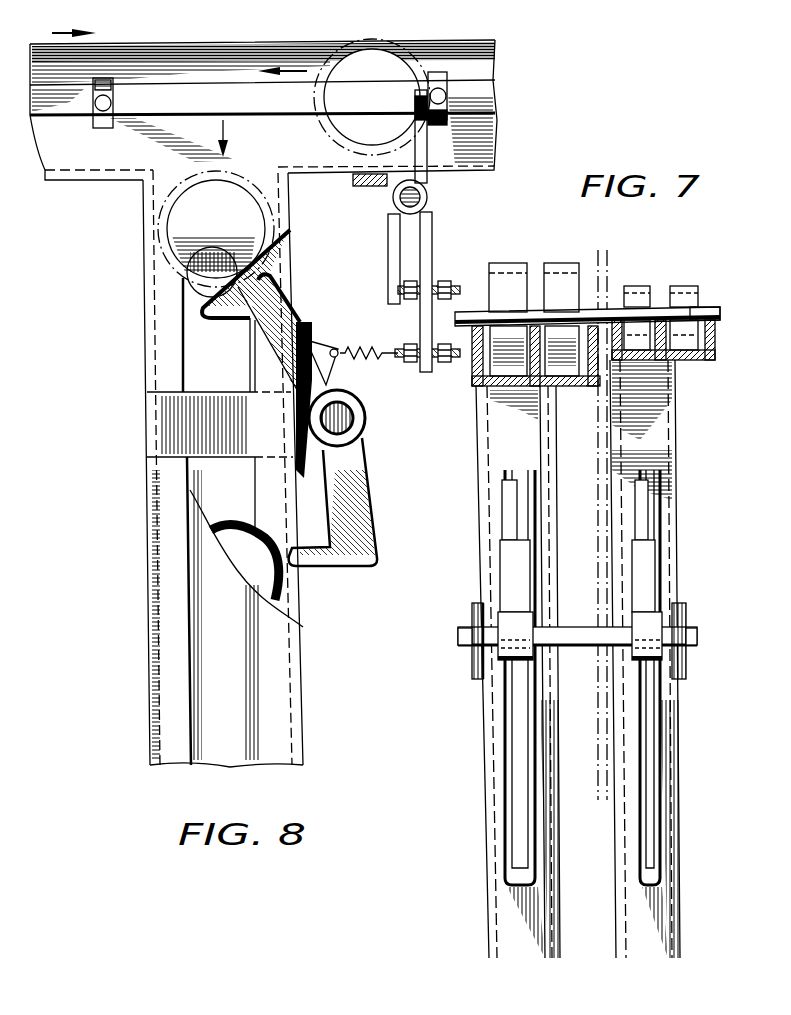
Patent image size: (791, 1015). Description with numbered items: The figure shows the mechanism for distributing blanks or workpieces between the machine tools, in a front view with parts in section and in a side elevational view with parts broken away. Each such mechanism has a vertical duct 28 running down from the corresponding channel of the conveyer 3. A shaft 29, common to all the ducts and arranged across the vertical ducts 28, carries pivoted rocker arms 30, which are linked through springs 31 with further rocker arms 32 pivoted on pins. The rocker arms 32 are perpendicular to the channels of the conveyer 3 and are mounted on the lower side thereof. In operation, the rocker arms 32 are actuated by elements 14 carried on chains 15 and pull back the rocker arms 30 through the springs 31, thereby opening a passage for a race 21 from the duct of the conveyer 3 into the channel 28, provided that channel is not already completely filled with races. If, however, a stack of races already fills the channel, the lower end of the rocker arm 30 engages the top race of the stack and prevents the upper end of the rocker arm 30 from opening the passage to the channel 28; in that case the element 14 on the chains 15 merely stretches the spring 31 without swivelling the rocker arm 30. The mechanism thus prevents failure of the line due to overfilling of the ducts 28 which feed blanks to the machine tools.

In FIG. 8, the conveyer 3 is at (421, 214).
In FIG. 7, the conveyer 3 is at (477, 375).
In FIG. 8, the element 14 is at (442, 92).
In FIG. 7, the element 14 is at (710, 305).
In FIG. 8, the chains 15 is at (70, 108).
In FIG. 8, the race 21 is at (170, 207).
In FIG. 7, the race 21 is at (558, 262).
In FIG. 8, the vertical duct 28 is at (295, 648).
In FIG. 7, the vertical duct 28 is at (638, 421).
In FIG. 8, the shaft 29 is at (356, 438).
In FIG. 7, the shaft 29 is at (688, 618).
In FIG. 8, the rocker arm 30 is at (292, 328).
In FIG. 7, the rocker arm 30 is at (645, 511).
In FIG. 8, the spring 31 is at (367, 360).
In FIG. 8, the rocker arm 32 is at (432, 181).